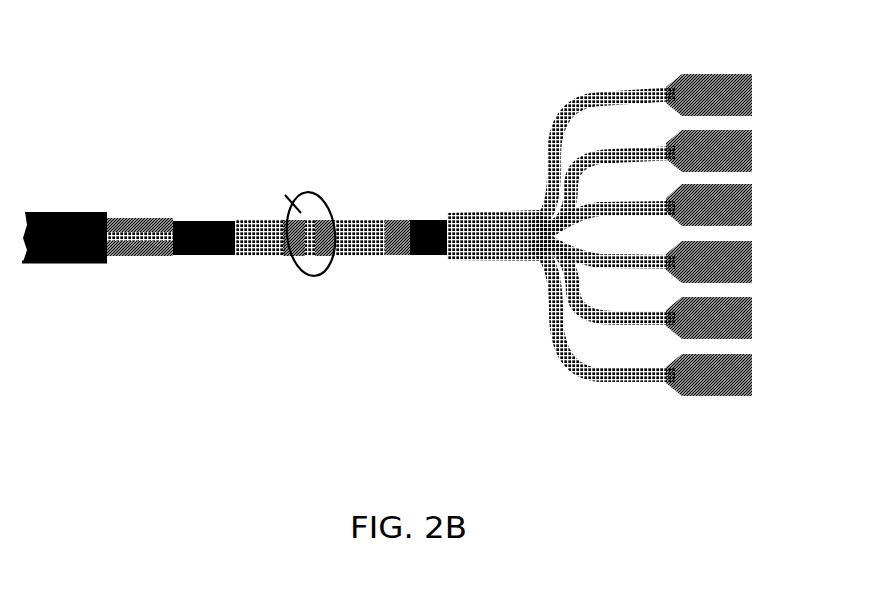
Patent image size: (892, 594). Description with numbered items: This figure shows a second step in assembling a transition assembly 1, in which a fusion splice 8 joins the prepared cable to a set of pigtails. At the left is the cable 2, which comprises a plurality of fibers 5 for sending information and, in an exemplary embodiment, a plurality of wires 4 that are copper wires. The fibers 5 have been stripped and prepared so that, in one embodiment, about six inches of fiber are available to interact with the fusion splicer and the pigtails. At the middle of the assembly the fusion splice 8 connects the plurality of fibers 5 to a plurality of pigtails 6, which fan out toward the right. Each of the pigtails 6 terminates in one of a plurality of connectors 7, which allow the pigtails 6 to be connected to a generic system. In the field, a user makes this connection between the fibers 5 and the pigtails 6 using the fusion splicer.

The transition assembly 1 is at (261, 396).
The cable 2 is at (42, 276).
The plurality of wires 4 is at (138, 266).
The plurality of fibers 5 is at (193, 207).
The plurality of pigtails 6 is at (485, 205).
The plurality of connectors 7 is at (768, 73).
The fusion splice 8 is at (317, 263).